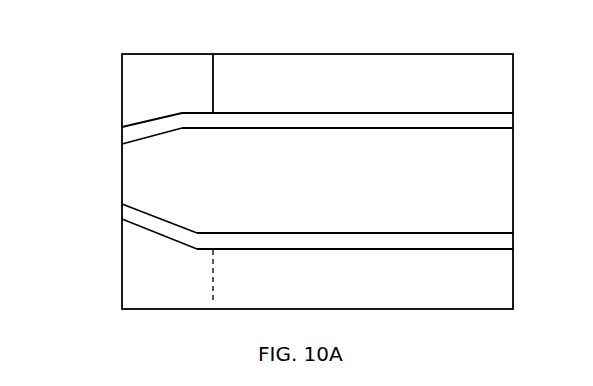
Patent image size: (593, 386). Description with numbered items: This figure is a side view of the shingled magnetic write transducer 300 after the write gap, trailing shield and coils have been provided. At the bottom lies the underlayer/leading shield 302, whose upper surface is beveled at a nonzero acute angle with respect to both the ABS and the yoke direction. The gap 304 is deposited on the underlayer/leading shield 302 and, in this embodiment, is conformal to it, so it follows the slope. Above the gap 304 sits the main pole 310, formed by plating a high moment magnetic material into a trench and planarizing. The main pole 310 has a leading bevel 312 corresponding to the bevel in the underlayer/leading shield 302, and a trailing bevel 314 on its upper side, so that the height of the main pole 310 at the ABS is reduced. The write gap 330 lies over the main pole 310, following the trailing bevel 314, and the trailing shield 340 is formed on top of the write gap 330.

The shingled magnetic write transducer 300 is at (322, 34).
The trailing shield 340 is at (181, 83).
The write gap 330 is at (513, 120).
The trailing bevel 314 is at (140, 124).
The main pole 310 is at (317, 180).
The leading bevel 312 is at (162, 206).
The gap 304 is at (513, 241).
The underlayer/leading shield 302 is at (317, 279).